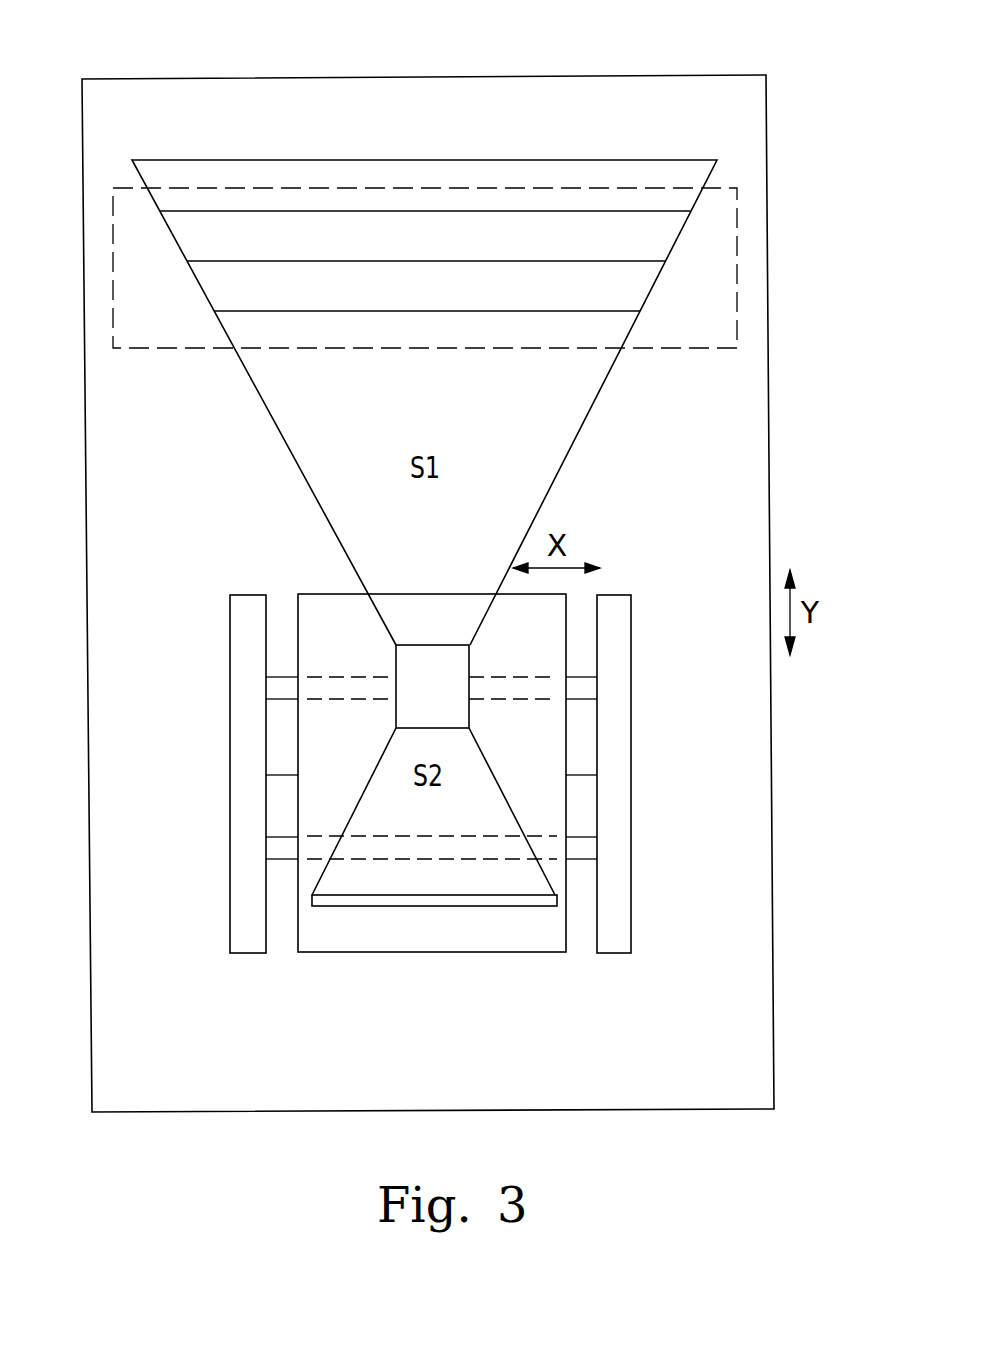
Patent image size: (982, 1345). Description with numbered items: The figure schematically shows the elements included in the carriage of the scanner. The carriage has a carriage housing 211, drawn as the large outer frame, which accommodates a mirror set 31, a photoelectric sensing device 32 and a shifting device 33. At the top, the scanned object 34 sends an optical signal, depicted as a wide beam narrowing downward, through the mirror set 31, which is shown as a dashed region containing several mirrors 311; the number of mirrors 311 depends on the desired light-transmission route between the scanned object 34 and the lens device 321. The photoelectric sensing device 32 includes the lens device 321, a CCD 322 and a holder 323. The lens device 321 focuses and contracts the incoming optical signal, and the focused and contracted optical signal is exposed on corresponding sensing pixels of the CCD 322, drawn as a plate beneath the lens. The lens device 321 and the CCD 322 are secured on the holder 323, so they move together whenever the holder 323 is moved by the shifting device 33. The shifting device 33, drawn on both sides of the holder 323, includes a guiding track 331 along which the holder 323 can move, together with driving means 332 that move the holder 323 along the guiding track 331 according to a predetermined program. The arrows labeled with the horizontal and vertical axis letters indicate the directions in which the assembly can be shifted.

The carriage housing 211 is at (750, 777).
The scanned object 34 is at (505, 160).
The mirror set 31 is at (467, 268).
The mirrors 311 is at (597, 258).
The photoelectric sensing device 32 is at (502, 806).
The lens device 321 is at (432, 665).
The CCD 322 is at (487, 900).
The holder 323 is at (543, 803).
The shifting device 33 is at (371, 774).
The guiding track 331 is at (280, 847).
The driving means 332 is at (248, 710).